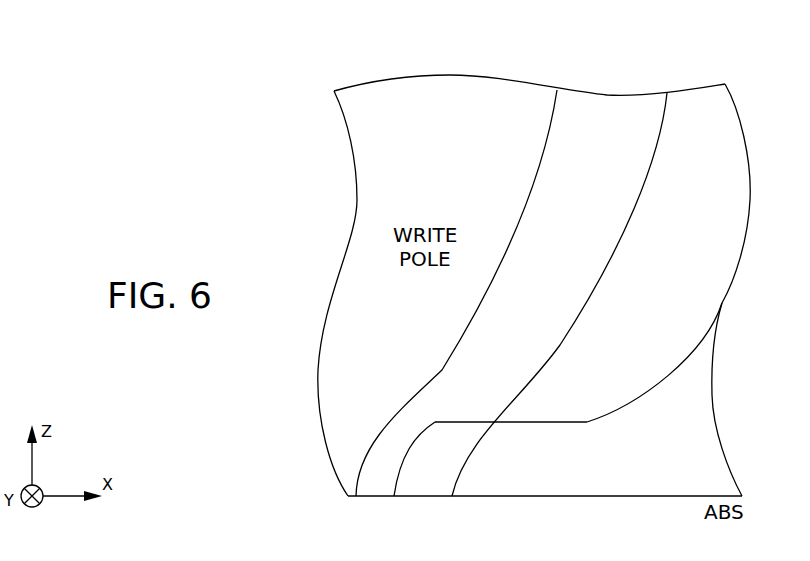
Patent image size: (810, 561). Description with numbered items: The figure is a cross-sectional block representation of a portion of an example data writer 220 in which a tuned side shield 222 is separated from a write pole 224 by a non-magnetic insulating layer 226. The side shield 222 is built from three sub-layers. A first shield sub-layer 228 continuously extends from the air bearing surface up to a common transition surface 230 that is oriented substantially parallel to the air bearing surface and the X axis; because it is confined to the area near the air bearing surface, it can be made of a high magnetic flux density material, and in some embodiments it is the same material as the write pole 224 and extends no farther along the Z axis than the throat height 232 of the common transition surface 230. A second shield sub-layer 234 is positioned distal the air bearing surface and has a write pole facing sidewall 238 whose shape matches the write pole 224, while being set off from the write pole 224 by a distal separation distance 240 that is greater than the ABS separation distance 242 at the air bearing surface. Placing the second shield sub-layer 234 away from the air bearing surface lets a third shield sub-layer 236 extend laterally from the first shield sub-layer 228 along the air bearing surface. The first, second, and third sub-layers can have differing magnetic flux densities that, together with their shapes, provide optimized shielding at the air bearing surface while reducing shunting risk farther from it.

The data writer 220 is at (699, 67).
The side shield 222 is at (724, 303).
The write pole 224 is at (468, 110).
The non-magnetic insulating layer 226 is at (538, 336).
The first shield sub-layer 228 is at (450, 468).
The common transition surface 230 is at (451, 422).
The throat height 232 is at (513, 424).
The second shield sub-layer 234 is at (720, 118).
The third shield sub-layer 236 is at (723, 486).
The write pole facing sidewall 238 is at (631, 222).
The distal separation distance 240 is at (664, 107).
The ABS separation distance 242 is at (392, 503).